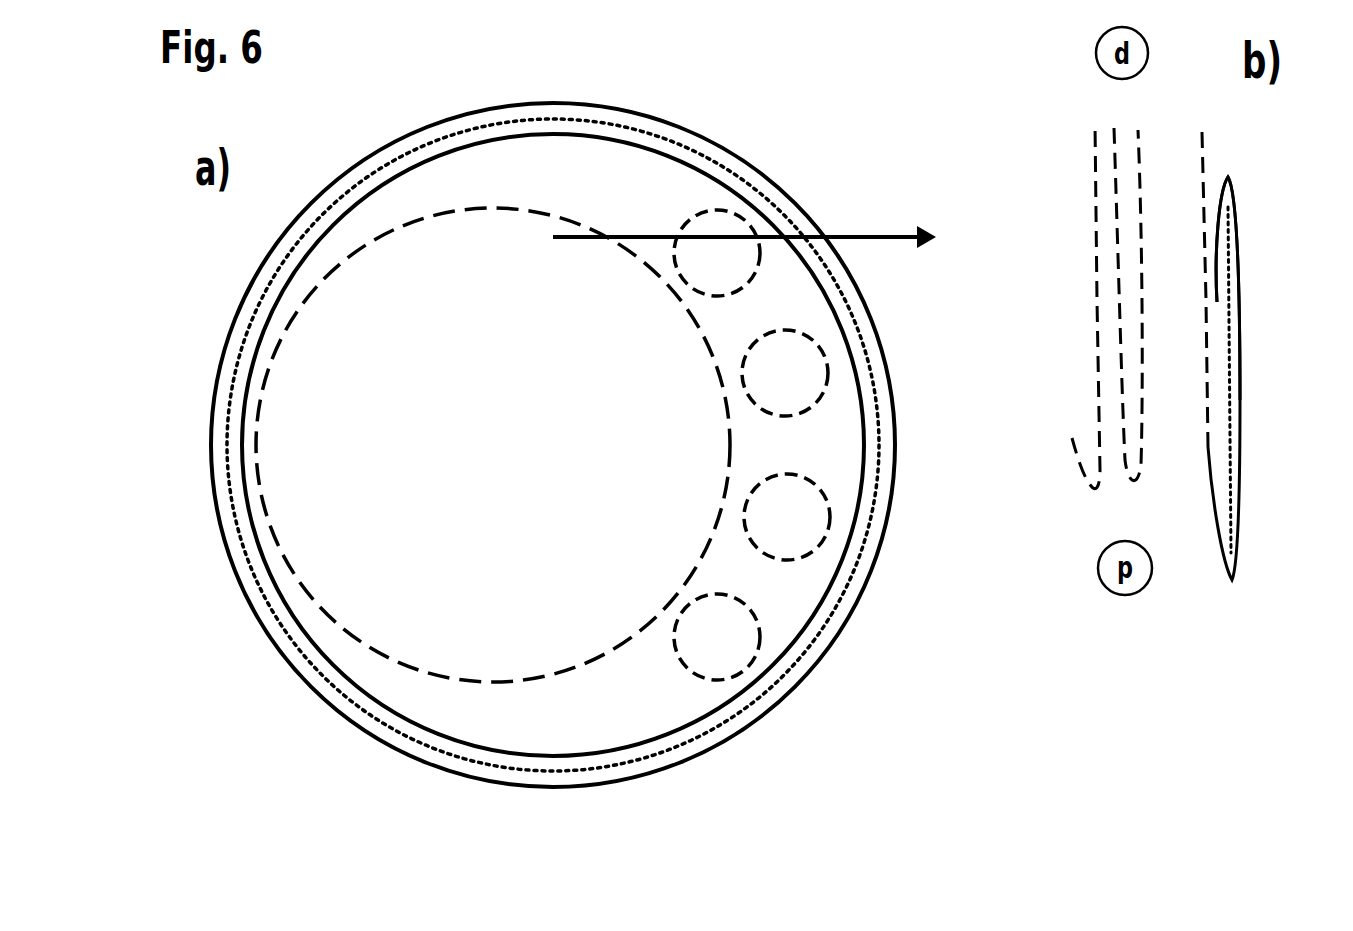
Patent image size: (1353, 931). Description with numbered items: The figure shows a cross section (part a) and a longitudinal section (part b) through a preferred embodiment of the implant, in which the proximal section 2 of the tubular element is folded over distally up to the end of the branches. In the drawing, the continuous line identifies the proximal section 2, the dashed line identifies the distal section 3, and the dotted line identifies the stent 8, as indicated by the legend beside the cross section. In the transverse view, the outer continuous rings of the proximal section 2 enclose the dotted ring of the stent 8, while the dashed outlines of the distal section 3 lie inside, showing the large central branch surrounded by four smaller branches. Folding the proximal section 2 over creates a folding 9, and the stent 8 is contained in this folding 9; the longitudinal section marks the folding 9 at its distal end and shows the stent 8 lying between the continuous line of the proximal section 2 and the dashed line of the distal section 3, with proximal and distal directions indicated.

The proximal section 2 is at (917, 773).
The distal section 3 is at (917, 728).
The stent 8 is at (917, 685).
The folding 9 is at (690, 742).